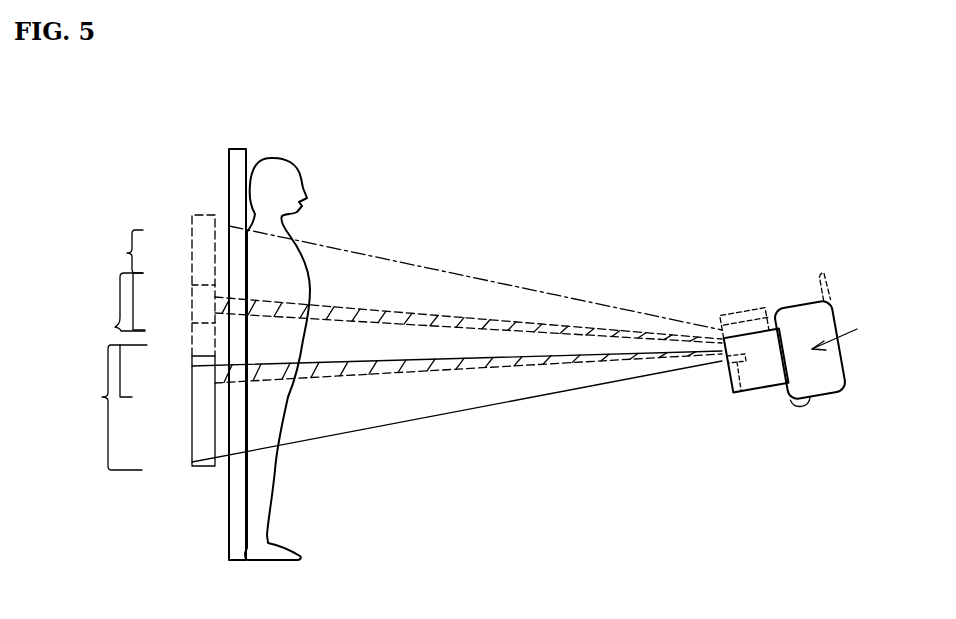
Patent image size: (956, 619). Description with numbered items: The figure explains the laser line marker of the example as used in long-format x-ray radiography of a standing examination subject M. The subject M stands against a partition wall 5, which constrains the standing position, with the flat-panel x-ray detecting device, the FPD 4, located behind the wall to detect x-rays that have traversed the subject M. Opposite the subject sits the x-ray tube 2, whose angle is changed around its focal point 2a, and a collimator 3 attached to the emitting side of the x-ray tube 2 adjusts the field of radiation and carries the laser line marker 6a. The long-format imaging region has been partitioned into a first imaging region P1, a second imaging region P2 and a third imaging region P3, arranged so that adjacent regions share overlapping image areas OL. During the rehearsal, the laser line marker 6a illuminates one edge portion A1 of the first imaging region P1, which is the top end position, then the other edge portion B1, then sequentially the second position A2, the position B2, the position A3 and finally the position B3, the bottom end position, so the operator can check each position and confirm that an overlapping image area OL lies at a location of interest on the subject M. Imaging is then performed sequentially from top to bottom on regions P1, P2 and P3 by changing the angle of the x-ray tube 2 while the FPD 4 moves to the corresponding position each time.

The x-ray tube 2 is at (817, 303).
The focal point 2a is at (850, 332).
The collimator 3 is at (759, 340).
The flat-panel-type x-ray detecting device (FPD) 4 is at (202, 468).
The partition wall 5 is at (228, 520).
The laser line marker 6a is at (741, 390).
The examination subject M is at (265, 548).
The overlapping image area OL is at (340, 317).
The edge portion of first imaging region A1 is at (229, 226).
The second position A2 is at (215, 297).
The position A3 is at (192, 366).
The other edge portion of first imaging region B1 is at (215, 313).
The position B2 is at (215, 383).
The position B3 is at (192, 463).
The first imaging region P1 is at (116, 251).
The second imaging region P2 is at (111, 305).
The third imaging region P3 is at (107, 407).